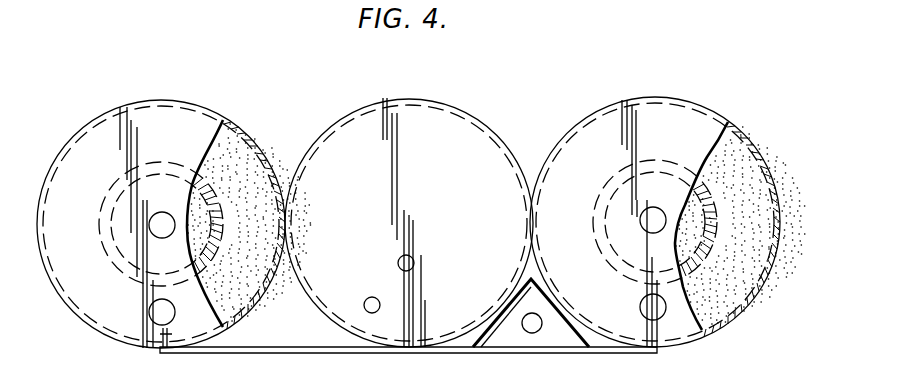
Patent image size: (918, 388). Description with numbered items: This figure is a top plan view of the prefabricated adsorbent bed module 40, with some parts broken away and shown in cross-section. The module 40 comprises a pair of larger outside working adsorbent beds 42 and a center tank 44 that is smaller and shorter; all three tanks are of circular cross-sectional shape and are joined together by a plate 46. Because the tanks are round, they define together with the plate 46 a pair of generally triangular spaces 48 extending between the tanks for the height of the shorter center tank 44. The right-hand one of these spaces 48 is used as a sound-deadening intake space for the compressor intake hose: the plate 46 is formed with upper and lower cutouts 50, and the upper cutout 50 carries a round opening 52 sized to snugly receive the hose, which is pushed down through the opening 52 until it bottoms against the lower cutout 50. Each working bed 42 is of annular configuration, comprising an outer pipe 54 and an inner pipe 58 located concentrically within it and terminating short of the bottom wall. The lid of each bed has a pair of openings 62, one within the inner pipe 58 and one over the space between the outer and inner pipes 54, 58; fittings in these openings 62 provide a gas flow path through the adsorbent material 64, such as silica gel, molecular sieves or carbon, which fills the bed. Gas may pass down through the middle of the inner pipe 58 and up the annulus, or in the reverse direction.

The adsorbent bed module 40 is at (289, 122).
The working adsorbent beds 42 is at (153, 100).
The center tank 44 is at (478, 121).
The plate 46 is at (277, 355).
The triangular spaces 48 is at (292, 323).
The cutouts 50 is at (553, 334).
The round opening 52 is at (528, 334).
The outer pipe 54 is at (773, 216).
The inner pipe 58 is at (707, 197).
The openings 62 is at (645, 230).
The adsorbent material 64 is at (738, 258).